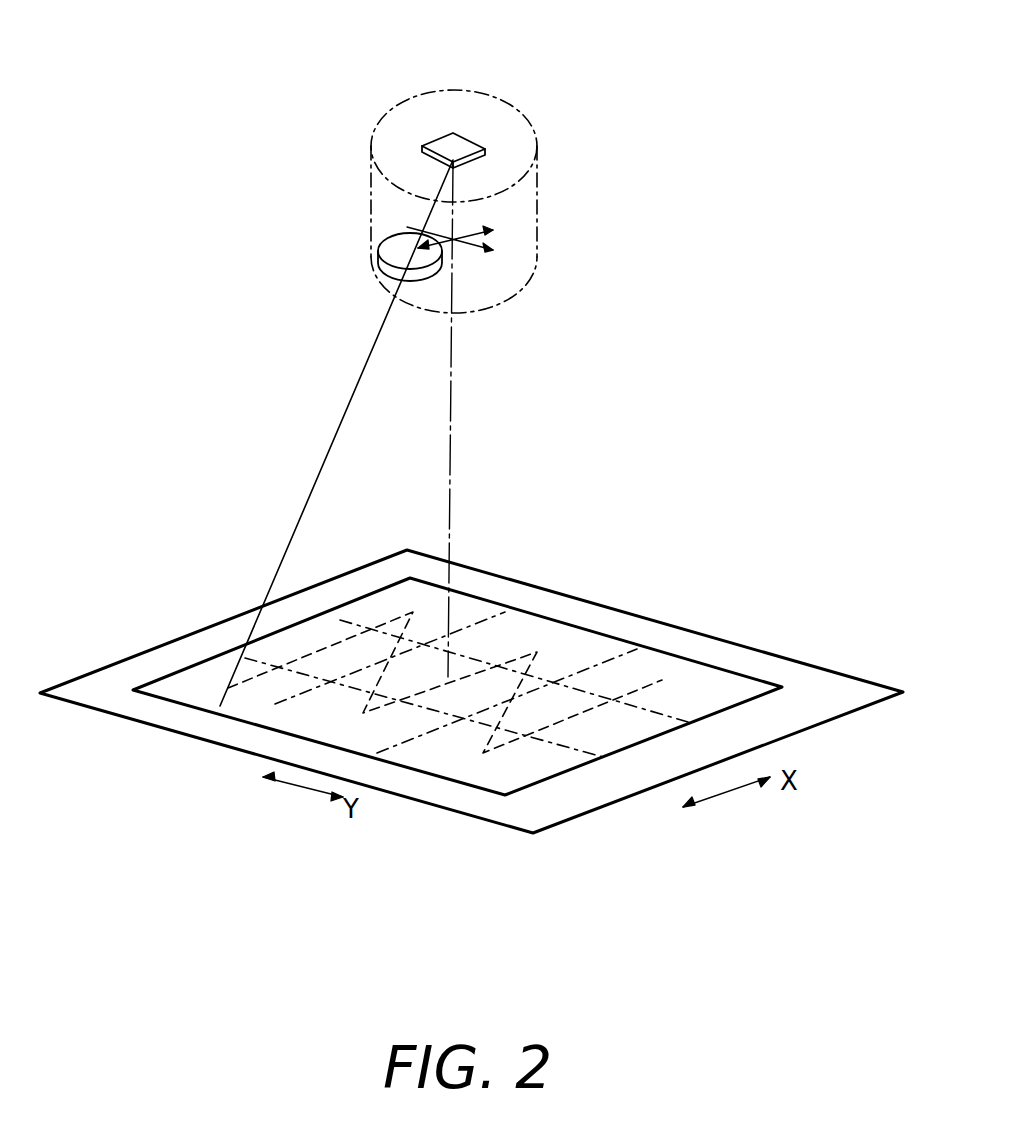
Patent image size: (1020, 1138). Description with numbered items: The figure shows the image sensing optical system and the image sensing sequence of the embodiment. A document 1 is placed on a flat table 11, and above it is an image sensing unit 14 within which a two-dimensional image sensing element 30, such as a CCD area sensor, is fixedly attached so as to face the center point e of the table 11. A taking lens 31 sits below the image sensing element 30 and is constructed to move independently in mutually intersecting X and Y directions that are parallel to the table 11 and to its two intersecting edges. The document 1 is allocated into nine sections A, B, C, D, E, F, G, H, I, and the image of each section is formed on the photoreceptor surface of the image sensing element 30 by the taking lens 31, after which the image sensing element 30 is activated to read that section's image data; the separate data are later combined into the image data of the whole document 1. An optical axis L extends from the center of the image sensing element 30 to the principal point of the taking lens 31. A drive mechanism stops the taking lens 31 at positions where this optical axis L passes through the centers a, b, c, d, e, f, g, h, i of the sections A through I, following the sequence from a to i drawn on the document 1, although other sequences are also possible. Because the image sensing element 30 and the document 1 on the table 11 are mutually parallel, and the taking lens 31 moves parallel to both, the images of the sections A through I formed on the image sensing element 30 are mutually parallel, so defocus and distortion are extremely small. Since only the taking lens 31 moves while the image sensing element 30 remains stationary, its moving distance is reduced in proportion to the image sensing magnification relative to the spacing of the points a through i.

The document 1 is at (598, 628).
The table 11 is at (684, 626).
The image sensing unit 14 is at (538, 225).
The image sensing element 30 is at (453, 133).
The taking lens 31 is at (388, 258).
The optical axis L is at (350, 395).
The section A is at (192, 678).
The section B is at (318, 628).
The section C is at (380, 592).
The section D is at (278, 717).
The section E is at (445, 660).
The section F is at (493, 613).
The section G is at (433, 760).
The section H is at (610, 730).
The section I is at (698, 692).
The center a is at (222, 706).
The center b is at (322, 647).
The center c is at (413, 612).
The center d is at (363, 713).
The center point e is at (445, 683).
The center f is at (537, 652).
The center g is at (484, 752).
The center h is at (580, 713).
The center i is at (660, 680).